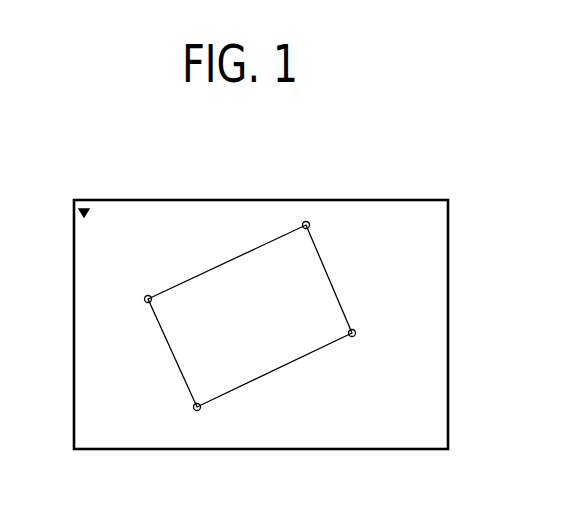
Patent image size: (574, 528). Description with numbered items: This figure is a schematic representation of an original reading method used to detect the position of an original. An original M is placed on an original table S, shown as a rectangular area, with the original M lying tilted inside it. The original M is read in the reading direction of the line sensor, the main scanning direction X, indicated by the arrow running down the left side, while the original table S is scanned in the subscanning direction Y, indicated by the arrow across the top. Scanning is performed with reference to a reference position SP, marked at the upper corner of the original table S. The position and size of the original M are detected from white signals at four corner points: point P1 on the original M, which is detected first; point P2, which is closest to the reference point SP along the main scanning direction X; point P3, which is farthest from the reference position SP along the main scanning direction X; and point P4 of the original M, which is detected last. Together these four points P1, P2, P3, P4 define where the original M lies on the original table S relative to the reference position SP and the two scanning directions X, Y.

The original table S is at (448, 298).
The original M is at (332, 278).
The reference position SP is at (100, 222).
The point P1 is at (132, 301).
The point P2 is at (322, 224).
The point P3 is at (197, 423).
The point P4 is at (369, 333).
The main scanning direction X is at (51, 200).
The subscanning direction Y is at (448, 173).